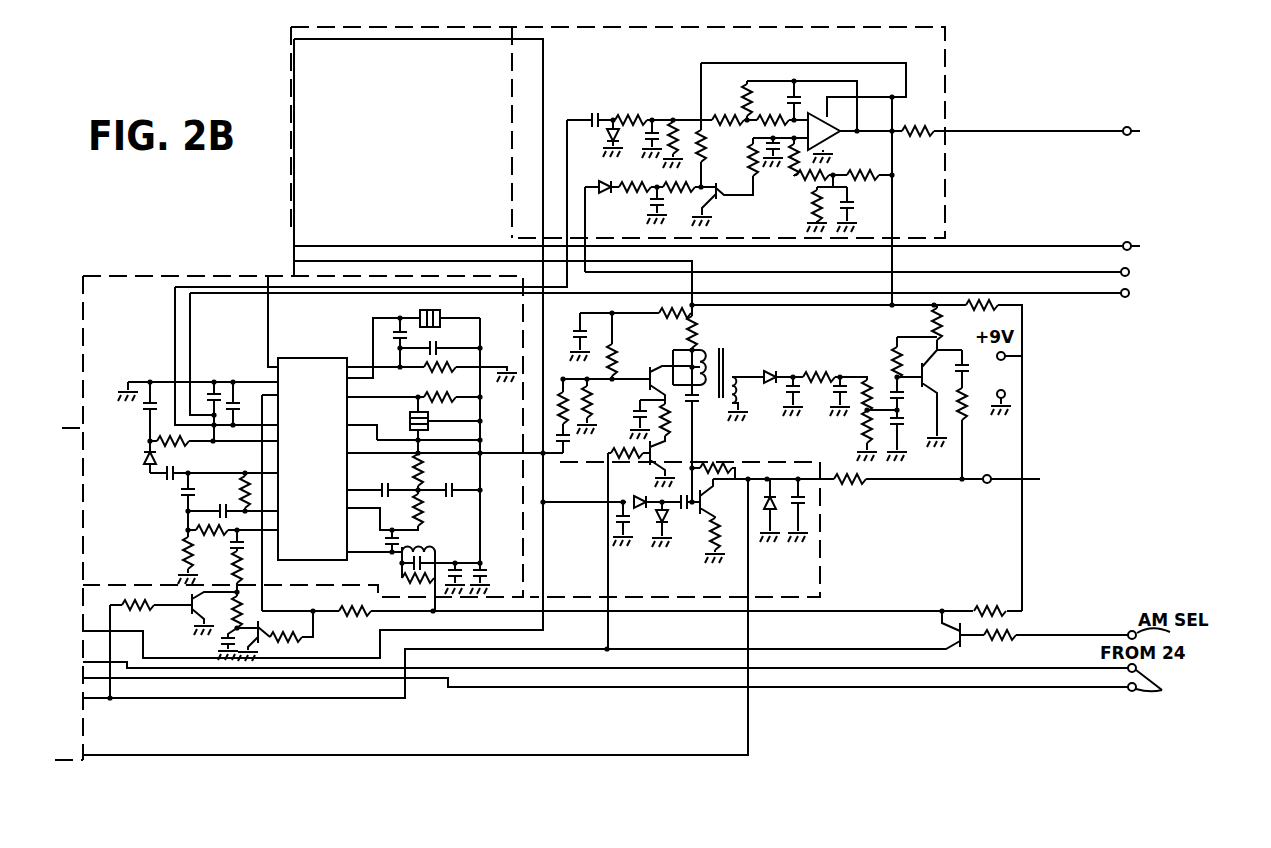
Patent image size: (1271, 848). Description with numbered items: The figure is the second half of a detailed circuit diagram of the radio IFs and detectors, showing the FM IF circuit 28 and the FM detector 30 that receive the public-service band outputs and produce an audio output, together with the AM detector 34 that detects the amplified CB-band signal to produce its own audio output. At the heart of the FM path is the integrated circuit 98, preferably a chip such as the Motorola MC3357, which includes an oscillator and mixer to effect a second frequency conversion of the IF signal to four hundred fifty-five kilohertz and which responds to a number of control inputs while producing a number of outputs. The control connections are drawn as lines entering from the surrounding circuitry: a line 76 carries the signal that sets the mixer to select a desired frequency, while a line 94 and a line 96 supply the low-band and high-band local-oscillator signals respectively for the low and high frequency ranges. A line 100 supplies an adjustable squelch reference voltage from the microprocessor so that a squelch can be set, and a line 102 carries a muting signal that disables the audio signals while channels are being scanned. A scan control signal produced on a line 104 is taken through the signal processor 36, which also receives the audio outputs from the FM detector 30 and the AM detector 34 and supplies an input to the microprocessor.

The FM IF circuit 28 is at (134, 307).
The FM detector 30 is at (134, 338).
The AM detector 34 is at (801, 575).
The signal processor 36 is at (612, 61).
The line 76 is at (424, 246).
The line 94 is at (925, 688).
The line 96 is at (993, 667).
The integrated circuit 98 is at (300, 537).
The line 100 is at (766, 293).
The line 102 is at (1036, 273).
The line 104 is at (175, 345).